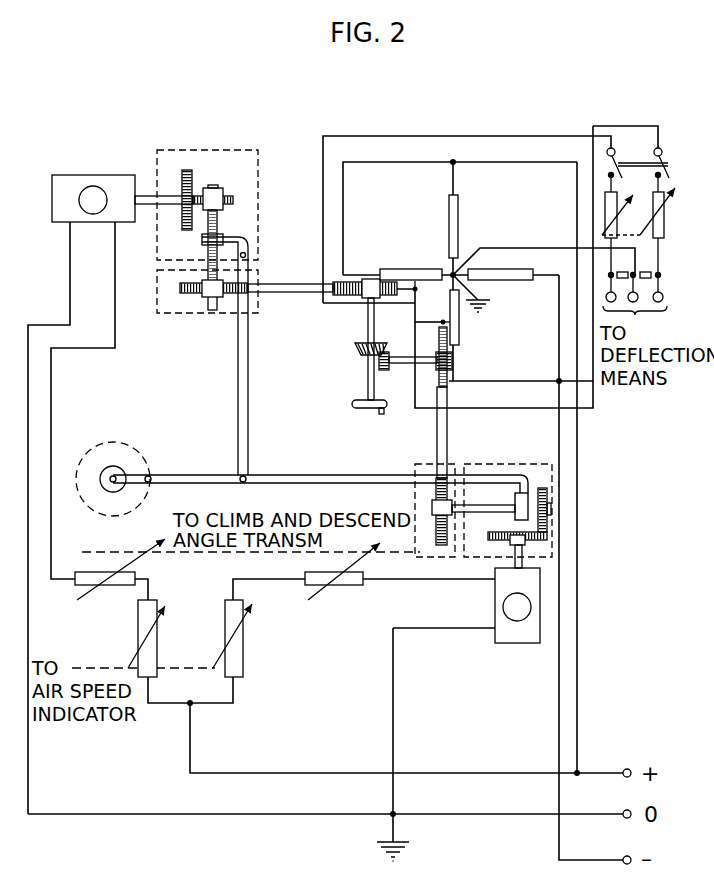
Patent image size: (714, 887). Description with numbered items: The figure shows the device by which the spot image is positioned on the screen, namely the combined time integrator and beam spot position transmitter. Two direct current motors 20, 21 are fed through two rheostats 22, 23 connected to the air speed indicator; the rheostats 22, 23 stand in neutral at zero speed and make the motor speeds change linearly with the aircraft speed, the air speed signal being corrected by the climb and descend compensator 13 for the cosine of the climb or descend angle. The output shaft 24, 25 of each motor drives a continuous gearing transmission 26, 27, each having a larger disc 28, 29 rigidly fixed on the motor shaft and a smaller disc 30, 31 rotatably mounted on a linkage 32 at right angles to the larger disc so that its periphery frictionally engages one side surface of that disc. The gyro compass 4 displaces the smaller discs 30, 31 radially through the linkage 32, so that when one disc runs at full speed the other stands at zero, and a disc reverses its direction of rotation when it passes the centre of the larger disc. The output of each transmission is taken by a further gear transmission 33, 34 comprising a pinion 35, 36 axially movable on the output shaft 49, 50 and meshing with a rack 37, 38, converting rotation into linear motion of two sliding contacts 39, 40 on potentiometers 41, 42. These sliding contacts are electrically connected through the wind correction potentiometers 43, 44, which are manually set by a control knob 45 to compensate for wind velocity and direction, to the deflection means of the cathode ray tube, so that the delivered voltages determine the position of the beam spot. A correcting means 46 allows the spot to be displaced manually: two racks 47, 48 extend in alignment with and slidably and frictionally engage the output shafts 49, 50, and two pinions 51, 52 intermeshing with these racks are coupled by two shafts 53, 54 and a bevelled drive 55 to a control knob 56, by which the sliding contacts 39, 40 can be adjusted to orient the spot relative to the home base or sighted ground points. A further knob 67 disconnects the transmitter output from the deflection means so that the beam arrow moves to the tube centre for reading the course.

The gyro compass 4 is at (113, 466).
The climb and descend compensator 13 is at (231, 586).
The direct current motor 20 is at (78, 180).
The direct current motor 21 is at (520, 643).
The rheostat 22 is at (157, 642).
The rheostat 23 is at (243, 662).
The output shaft 24 is at (150, 206).
The output shaft 25 is at (515, 560).
The continuous gearing transmission 26 is at (212, 148).
The continuous gearing transmission 27 is at (505, 469).
The larger disc 28 is at (182, 182).
The larger disc 29 is at (500, 539).
The smaller disc 30 is at (212, 188).
The smaller disc 31 is at (543, 499).
The linkage 32 is at (238, 333).
The gear transmission 33 is at (185, 312).
The gear transmission 34 is at (429, 557).
The pinion 35 is at (212, 298).
The pinion 36 is at (432, 498).
The rack 37 is at (180, 287).
The rack 38 is at (356, 566).
The sliding contact 39 is at (420, 283).
The sliding contact 40 is at (443, 320).
The potentiometer 41 is at (404, 269).
The potentiometer 42 is at (458, 222).
The wind correction potentiometer 43 is at (605, 206).
The wind correction potentiometer 44 is at (664, 214).
The control knob 45 is at (633, 229).
The correcting means 46 is at (363, 380).
The rack 47 is at (352, 283).
The rack 48 is at (452, 372).
The output shaft 49 is at (286, 284).
The output shaft 50 is at (437, 440).
The pinion 51 is at (365, 297).
The pinion 52 is at (447, 345).
The shaft 53 is at (368, 325).
The shaft 54 is at (395, 364).
The bevelled drive 55 is at (380, 346).
The control knob 56 is at (368, 408).
The knob 67 is at (668, 160).